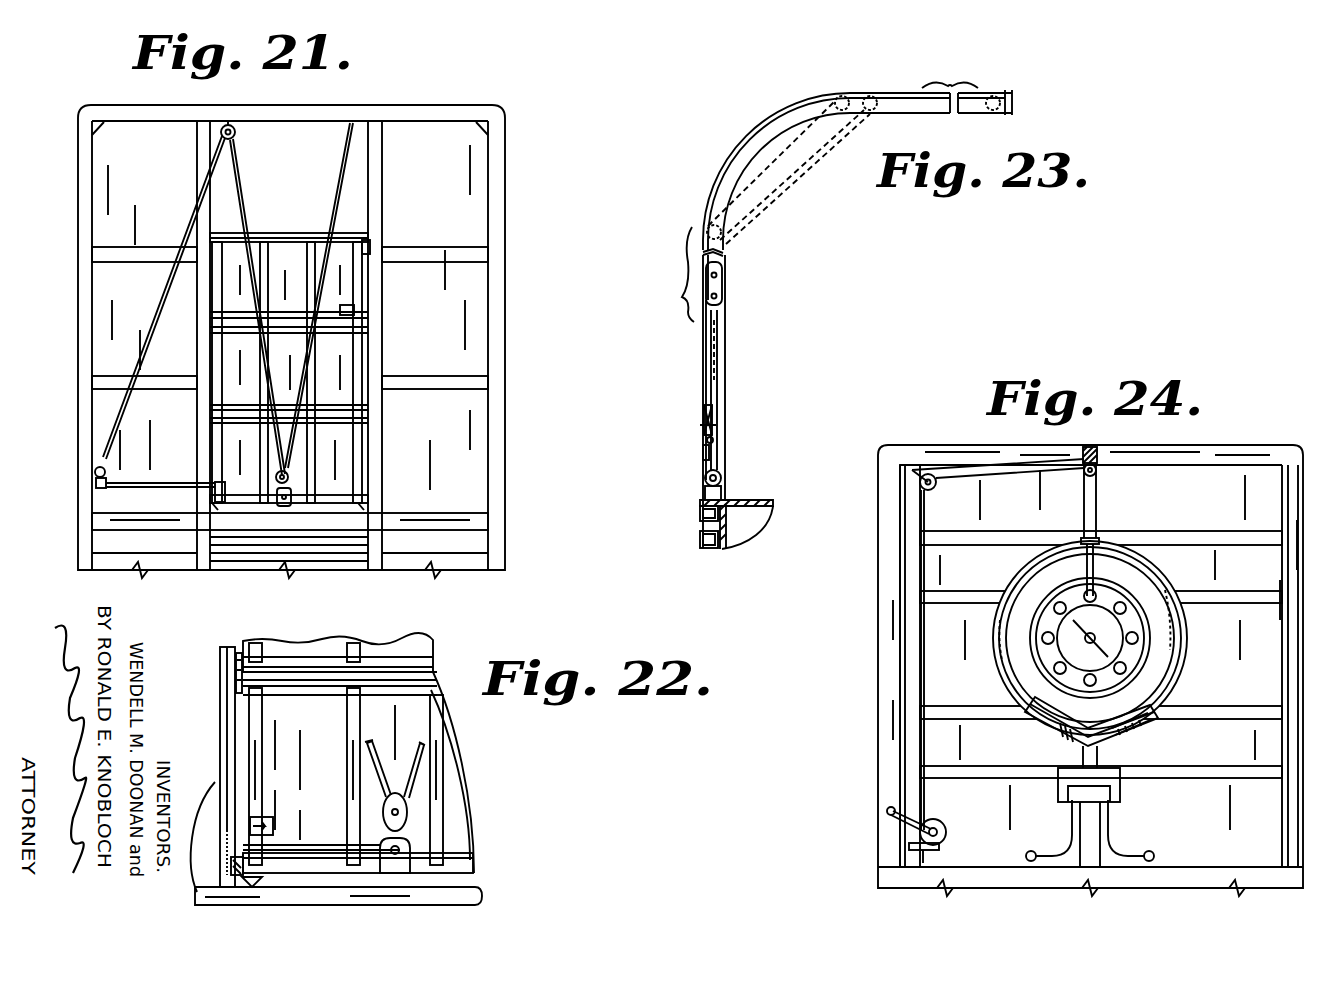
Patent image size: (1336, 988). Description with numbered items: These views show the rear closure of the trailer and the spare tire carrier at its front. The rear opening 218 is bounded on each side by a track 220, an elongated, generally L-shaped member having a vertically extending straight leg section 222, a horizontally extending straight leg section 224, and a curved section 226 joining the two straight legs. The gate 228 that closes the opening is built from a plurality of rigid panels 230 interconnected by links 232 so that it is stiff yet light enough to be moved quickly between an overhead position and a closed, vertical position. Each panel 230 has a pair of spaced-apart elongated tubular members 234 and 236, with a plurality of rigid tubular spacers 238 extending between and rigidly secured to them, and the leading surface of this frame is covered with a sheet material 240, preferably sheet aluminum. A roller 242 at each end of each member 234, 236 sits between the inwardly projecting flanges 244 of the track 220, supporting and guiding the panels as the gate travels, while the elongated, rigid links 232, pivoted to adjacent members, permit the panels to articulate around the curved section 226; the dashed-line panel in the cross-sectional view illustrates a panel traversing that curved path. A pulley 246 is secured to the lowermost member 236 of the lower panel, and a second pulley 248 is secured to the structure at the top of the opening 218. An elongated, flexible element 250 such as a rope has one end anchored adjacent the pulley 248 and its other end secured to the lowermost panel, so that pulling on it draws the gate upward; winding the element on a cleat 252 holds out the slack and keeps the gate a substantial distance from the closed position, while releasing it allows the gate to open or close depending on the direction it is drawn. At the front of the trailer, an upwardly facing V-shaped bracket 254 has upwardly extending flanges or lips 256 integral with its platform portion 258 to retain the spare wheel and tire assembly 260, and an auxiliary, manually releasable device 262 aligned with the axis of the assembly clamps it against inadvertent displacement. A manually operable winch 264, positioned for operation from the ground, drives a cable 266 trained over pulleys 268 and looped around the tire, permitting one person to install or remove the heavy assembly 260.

In FIG. 21, the rear opening 218 is at (294, 295).
In FIG. 21, the track 220 is at (368, 184).
In FIG. 22, the track 220 is at (235, 684).
In FIG. 23, the track 220 is at (727, 376).
In FIG. 21, the vertically extending straight leg section 222 is at (375, 458).
In FIG. 22, the vertically extending straight leg section 222 is at (222, 656).
In FIG. 23, the horizontally extending straight leg section 224 is at (890, 100).
In FIG. 21, the curved section 226 is at (378, 152).
In FIG. 23, the curved section 226 is at (745, 152).
In FIG. 21, the gate 228 is at (302, 233).
In FIG. 22, the gate 228 is at (456, 805).
In FIG. 23, the gate 228 is at (720, 330).
In FIG. 21, the rigid panels 230 is at (358, 440).
In FIG. 22, the rigid panels 230 is at (433, 668).
In FIG. 23, the rigid panels 230 is at (682, 387).
In FIG. 21, the links 232 is at (210, 406).
In FIG. 22, the links 232 is at (243, 650).
In FIG. 23, the links 232 is at (720, 290).
In FIG. 21, the tubular member 234 is at (362, 247).
In FIG. 22, the tubular member 234 is at (332, 696).
In FIG. 21, the tubular member 236 is at (345, 312).
In FIG. 22, the tubular member 236 is at (332, 855).
In FIG. 21, the tubular spacers 238 is at (310, 380).
In FIG. 22, the tubular spacers 238 is at (352, 643).
In FIG. 21, the sheet material 240 is at (345, 486).
In FIG. 22, the sheet material 240 is at (456, 755).
In FIG. 23, the sheet material 240 is at (725, 415).
In FIG. 22, the roller 242 is at (245, 866).
In FIG. 23, the roller 242 is at (868, 108).
In FIG. 21, the inwardly projecting flanges 244 is at (200, 513).
In FIG. 22, the inwardly projecting flanges 244 is at (232, 815).
In FIG. 21, the pulley 246 is at (277, 478).
In FIG. 22, the pulley 246 is at (383, 812).
In FIG. 23, the pulley 246 is at (698, 422).
In FIG. 21, the second pulley 248 is at (235, 128).
In FIG. 21, the elongated flexible element 250 is at (240, 170).
In FIG. 22, the elongated flexible element 250 is at (362, 752).
In FIG. 23, the elongated flexible element 250 is at (705, 373).
In FIG. 21, the cleat 252 is at (95, 487).
In FIG. 24, the V-shaped bracket 254 is at (1048, 728).
In FIG. 24, the flanges or lips 256 is at (1105, 732).
In FIG. 24, the platform portion 258 is at (1148, 720).
In FIG. 24, the spare wheel and tire assembly 260 is at (1187, 640).
In FIG. 24, the manually releasable device 262 is at (1092, 636).
In FIG. 24, the manually operable winch 264 is at (945, 822).
In FIG. 24, the cable 266 is at (922, 690).
In FIG. 24, the pulleys 268 is at (1098, 473).